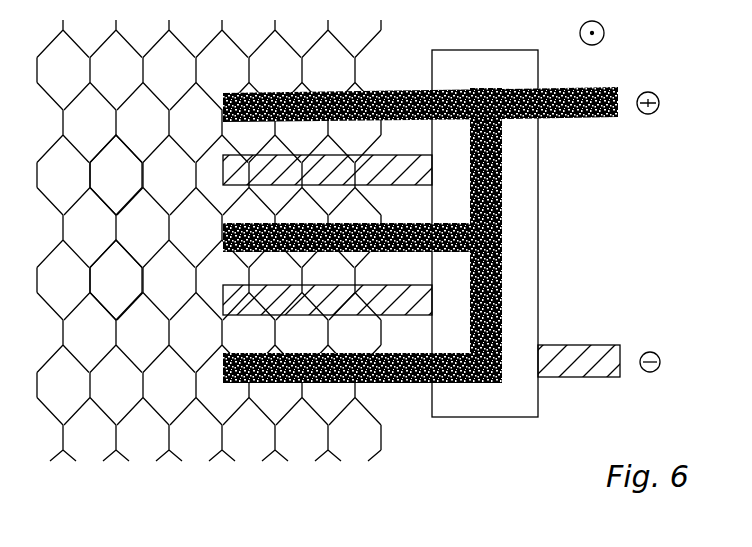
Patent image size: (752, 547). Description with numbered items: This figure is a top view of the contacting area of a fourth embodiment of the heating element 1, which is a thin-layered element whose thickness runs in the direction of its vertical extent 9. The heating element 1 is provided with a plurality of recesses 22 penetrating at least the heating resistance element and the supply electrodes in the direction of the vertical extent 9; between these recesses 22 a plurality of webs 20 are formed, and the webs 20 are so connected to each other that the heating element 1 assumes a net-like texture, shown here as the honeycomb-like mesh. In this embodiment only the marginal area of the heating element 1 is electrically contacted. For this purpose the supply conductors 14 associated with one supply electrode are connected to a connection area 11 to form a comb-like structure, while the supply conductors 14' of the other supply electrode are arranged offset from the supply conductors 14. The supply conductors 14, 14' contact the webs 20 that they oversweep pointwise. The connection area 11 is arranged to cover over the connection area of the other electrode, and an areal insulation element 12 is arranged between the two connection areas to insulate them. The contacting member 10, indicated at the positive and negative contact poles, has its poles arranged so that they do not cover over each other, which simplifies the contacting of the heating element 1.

The heating element 1 is at (151, 478).
The vertical extent 9 is at (604, 33).
The contacting member 10 is at (603, 117).
The connection area 11 is at (500, 175).
The insulation element 12 is at (527, 228).
The supply conductor 14 is at (362, 250).
The supply conductor 14' is at (327, 218).
The web 20 is at (134, 102).
The recess 22 is at (143, 322).